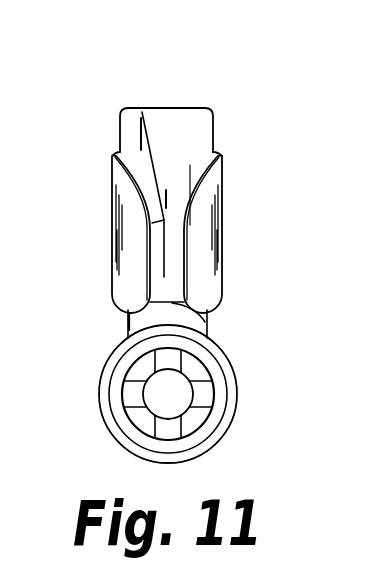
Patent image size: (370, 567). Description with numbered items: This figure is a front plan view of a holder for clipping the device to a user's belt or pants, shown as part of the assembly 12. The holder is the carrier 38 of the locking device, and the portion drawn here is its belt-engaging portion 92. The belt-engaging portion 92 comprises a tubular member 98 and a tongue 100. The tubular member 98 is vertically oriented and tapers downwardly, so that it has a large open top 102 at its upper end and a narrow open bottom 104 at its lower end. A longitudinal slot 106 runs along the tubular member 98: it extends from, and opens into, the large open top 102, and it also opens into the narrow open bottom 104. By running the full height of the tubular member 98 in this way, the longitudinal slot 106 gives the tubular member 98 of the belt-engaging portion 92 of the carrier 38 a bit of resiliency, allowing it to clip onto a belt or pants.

The hose reel assembly 12 is at (257, 218).
The carrier 38 is at (112, 190).
The belt-engaging portion 92 is at (222, 117).
The tubular member 98 is at (125, 247).
The tongue 100 is at (173, 133).
The large open top 102 is at (193, 147).
The narrow open bottom 104 is at (202, 323).
The longitudinal slot 106 is at (146, 108).